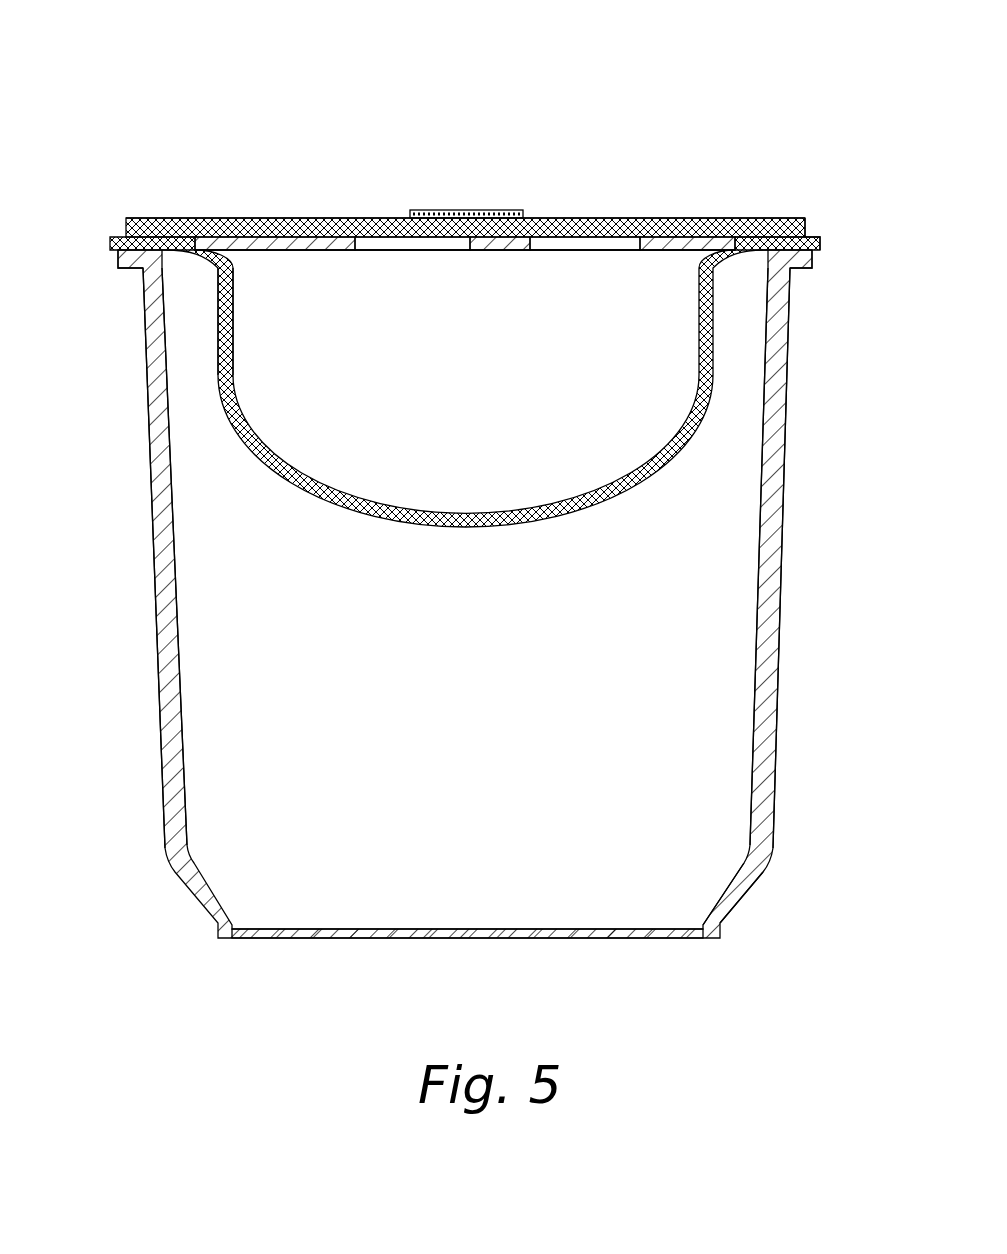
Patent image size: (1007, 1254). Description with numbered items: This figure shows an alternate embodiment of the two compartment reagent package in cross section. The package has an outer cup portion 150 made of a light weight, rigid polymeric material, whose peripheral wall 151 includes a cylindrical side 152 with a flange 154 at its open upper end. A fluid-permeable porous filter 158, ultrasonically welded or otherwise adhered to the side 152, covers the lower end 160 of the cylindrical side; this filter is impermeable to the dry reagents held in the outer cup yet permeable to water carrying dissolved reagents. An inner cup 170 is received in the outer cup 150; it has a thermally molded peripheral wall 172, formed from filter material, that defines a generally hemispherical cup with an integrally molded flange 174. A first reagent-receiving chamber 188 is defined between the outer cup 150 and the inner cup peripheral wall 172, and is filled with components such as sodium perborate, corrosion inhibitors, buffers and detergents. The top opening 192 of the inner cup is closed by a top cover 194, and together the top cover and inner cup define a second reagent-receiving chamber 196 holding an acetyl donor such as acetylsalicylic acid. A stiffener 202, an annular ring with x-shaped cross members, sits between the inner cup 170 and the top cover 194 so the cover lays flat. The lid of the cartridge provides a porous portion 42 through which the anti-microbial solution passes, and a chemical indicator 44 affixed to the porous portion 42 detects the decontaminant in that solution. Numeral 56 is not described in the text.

The porous portion 42 is at (344, 190).
The chemical indicator 44 is at (441, 209).
The container flange 56 is at (188, 284).
The outer cup portion 150 is at (812, 627).
The peripheral wall 151 is at (157, 655).
The cylindrical side 152 is at (790, 462).
The flange 154 is at (811, 275).
The porous filter 158 is at (655, 940).
The lower end 160 is at (640, 869).
The inner cup 170 is at (355, 522).
The peripheral wall 172 is at (235, 332).
The flange 174 is at (818, 228).
The first reagent-receiving chamber 188 is at (483, 715).
The top opening 192 is at (258, 256).
The top cover 194 is at (608, 213).
The second reagent-receiving chamber 196 is at (483, 395).
The stiffener 202 is at (650, 260).